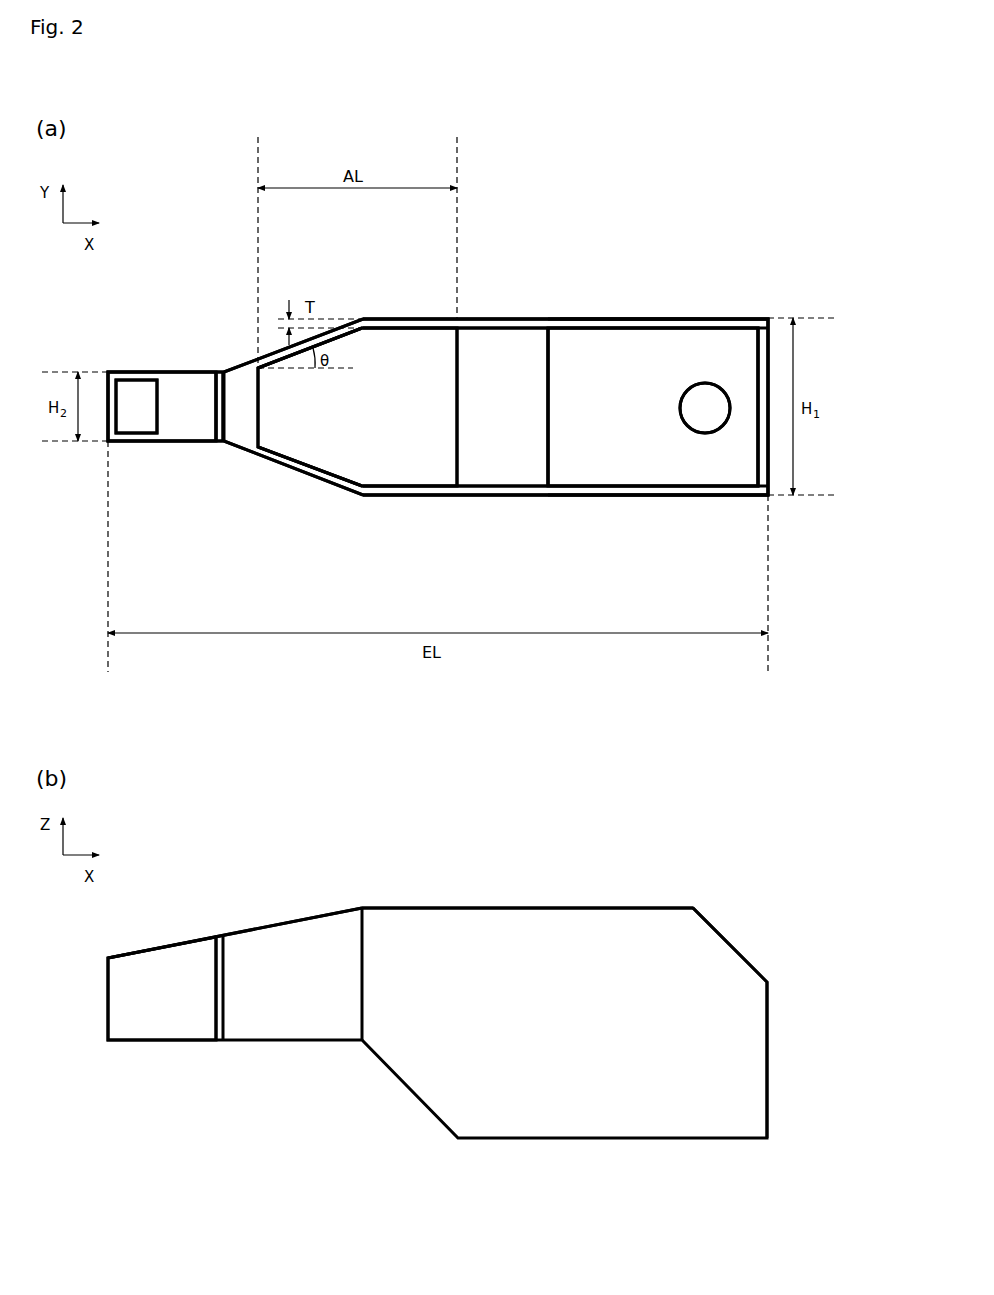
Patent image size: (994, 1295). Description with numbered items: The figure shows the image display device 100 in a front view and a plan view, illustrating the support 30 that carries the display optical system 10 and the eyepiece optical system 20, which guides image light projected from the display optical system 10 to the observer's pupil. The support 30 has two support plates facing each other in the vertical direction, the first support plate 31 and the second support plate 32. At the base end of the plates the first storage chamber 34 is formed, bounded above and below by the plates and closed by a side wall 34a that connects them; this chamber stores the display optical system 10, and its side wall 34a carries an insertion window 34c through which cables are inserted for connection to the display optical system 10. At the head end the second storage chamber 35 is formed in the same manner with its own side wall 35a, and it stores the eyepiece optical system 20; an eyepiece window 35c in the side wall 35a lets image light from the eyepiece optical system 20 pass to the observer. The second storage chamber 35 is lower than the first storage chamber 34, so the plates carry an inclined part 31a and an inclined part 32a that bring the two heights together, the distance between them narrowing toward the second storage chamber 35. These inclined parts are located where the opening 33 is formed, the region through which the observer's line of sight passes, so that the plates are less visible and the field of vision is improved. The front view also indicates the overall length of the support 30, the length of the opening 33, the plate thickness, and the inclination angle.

The image display device 100 is at (560, 222).
The display optical system 10 is at (614, 316).
The eyepiece optical system 20 is at (211, 366).
The support 30 is at (407, 510).
The first support plate 31 is at (515, 316).
The inclined part 31a is at (280, 347).
The second support plate 32 is at (513, 497).
The inclined part 32a is at (326, 484).
The opening 33 is at (422, 366).
The first storage chamber 34 is at (706, 316).
The side wall 34a is at (655, 463).
The insertion window 34c is at (703, 415).
The second storage chamber 35 is at (160, 368).
The side wall 35a is at (178, 425).
The eyepiece window 35c is at (132, 418).